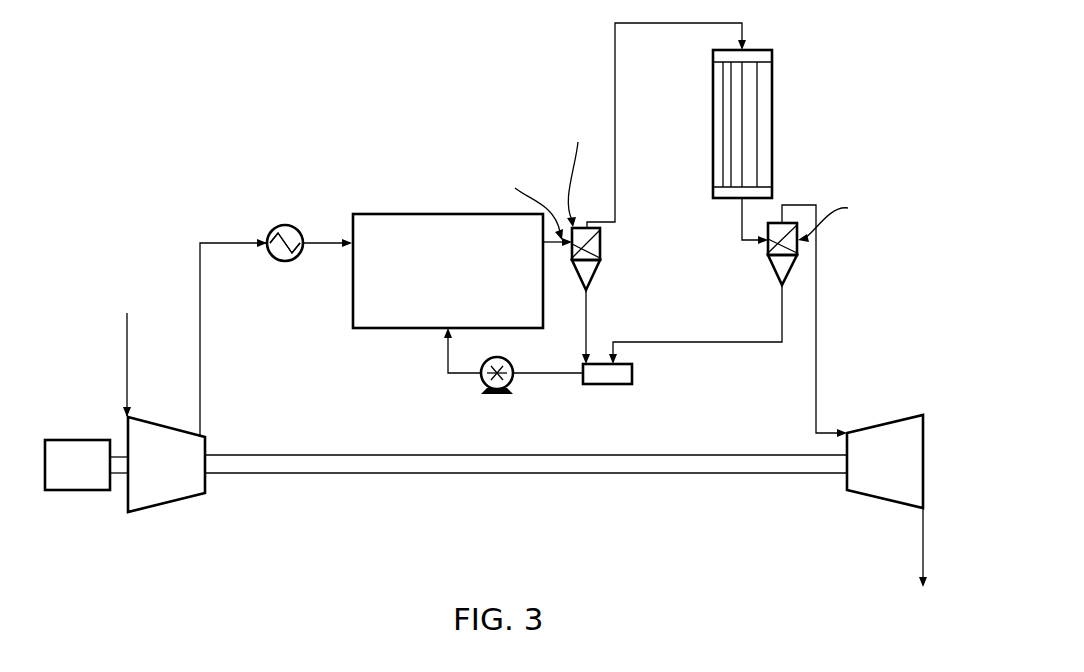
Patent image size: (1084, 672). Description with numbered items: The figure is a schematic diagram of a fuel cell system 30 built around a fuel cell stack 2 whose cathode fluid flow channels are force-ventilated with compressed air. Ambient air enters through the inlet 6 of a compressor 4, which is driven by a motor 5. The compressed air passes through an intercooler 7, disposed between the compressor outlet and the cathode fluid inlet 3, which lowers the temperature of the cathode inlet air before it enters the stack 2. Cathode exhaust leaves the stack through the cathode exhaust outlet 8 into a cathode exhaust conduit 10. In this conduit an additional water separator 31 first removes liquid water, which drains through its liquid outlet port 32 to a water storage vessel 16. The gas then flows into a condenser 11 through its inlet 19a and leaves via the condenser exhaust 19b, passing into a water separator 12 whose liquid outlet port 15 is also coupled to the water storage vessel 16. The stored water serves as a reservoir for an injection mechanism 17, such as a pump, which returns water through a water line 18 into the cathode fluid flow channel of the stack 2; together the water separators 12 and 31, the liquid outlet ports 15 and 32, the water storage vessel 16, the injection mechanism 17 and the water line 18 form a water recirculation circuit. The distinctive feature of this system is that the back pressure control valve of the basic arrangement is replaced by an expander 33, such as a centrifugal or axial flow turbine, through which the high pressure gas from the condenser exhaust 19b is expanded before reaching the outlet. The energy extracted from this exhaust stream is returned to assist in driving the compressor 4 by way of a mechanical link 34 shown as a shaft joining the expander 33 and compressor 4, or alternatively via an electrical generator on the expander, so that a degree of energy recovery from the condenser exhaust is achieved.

The fuel cell stack 2 is at (420, 213).
The cathode fluid inlet 3 is at (322, 240).
The compressor 4 is at (160, 511).
The motor 5 is at (88, 438).
The inlet 6 is at (127, 358).
The intercooler 7 is at (290, 261).
The cathode exhaust outlet 8 is at (548, 246).
The cathode exhaust conduit 10 is at (615, 80).
The condenser 11 is at (772, 105).
The water separator 12 is at (798, 248).
The liquid outlet port 15 is at (782, 285).
The water storage vessel 16 is at (632, 376).
The injection mechanism 17 is at (500, 394).
The water line 18 is at (448, 358).
The condenser inlet 19a is at (745, 50).
The condenser exhaust 19b is at (742, 215).
The fuel cell system 30 is at (310, 75).
The additional water separator 31 is at (602, 247).
The liquid outlet port 32 is at (596, 280).
The expander 33 is at (880, 422).
The mechanical link 34 is at (513, 474).